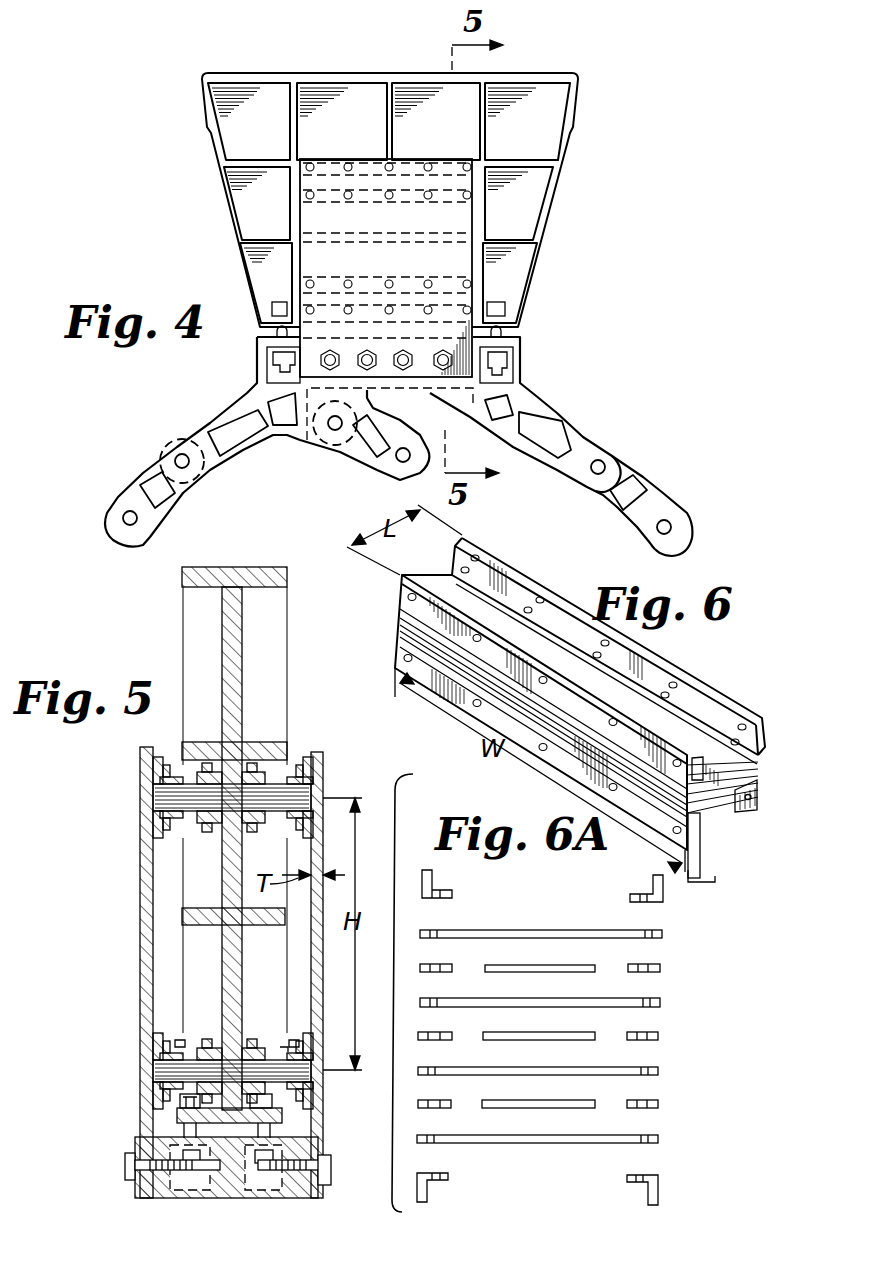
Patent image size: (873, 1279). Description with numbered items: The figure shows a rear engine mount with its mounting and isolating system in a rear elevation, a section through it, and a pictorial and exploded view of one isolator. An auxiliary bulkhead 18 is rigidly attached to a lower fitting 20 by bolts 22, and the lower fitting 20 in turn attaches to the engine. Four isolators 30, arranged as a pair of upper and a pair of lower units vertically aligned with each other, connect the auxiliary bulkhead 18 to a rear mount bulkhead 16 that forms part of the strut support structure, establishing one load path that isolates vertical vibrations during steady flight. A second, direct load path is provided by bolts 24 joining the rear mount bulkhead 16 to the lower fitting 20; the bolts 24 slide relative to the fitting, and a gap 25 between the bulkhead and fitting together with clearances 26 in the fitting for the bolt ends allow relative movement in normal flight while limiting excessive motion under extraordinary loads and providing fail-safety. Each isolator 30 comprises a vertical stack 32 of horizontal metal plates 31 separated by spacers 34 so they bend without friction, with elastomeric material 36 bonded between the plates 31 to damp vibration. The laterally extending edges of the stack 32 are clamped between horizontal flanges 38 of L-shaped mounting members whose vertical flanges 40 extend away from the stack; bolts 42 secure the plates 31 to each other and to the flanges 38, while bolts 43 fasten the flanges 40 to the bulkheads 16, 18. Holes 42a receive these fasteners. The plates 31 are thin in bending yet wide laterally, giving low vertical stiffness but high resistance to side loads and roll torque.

In FIG. 4, the rear mount bulkhead 16 is at (572, 142).
In FIG. 5, the rear mount bulkhead 16 is at (182, 572).
In FIG. 4, the auxiliary bulkhead 18 is at (320, 217).
In FIG. 5, the auxiliary bulkhead 18 is at (142, 943).
In FIG. 4, the lower fitting 20 is at (593, 425).
In FIG. 5, the lower fitting 20 is at (158, 1200).
In FIG. 4, the bolts 22 is at (400, 366).
In FIG. 5, the bolts 22 is at (327, 1172).
In FIG. 4, the bolts 24 is at (500, 305).
In FIG. 5, the bolts 24 is at (270, 1132).
In FIG. 4, the gap 25 is at (262, 330).
In FIG. 5, the gap 25 is at (180, 1123).
In FIG. 4, the clearances 26 is at (505, 376).
In FIG. 5, the clearances 26 is at (267, 1200).
In FIG. 5, the isolator 30 is at (297, 770).
In FIG. 6, the isolator 30 is at (663, 655).
In FIG. 6A, the metal plates 31 is at (533, 930).
In FIG. 5, the vertical stack 32 is at (183, 820).
In FIG. 6, the vertical stack 32 is at (728, 803).
In FIG. 6A, the spacers 34 is at (655, 965).
In FIG. 6A, the elastomeric material 36 is at (568, 1032).
In FIG. 5, the horizontal flange 38 is at (180, 1047).
In FIG. 6, the horizontal flange 38 is at (693, 864).
In FIG. 6A, the horizontal flange 38 is at (445, 892).
In FIG. 5, the vertical flange 40 is at (158, 1018).
In FIG. 6, the vertical flange 40 is at (517, 573).
In FIG. 6A, the vertical flange 40 is at (656, 878).
In FIG. 5, the bolts 42 is at (288, 1052).
In FIG. 6, the hole 42a is at (667, 695).
In FIG. 4, the bolts 43 is at (431, 281).
In FIG. 5, the bolts 43 is at (297, 1050).